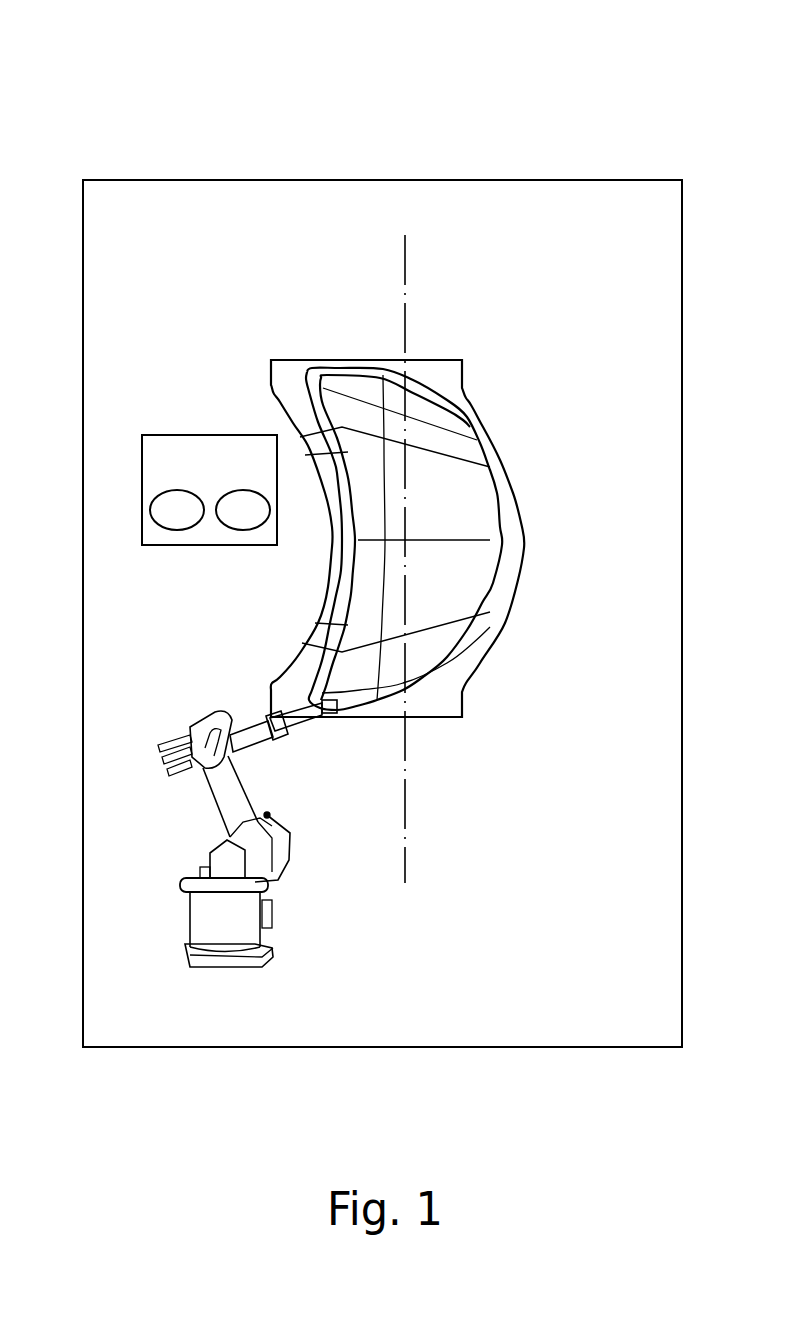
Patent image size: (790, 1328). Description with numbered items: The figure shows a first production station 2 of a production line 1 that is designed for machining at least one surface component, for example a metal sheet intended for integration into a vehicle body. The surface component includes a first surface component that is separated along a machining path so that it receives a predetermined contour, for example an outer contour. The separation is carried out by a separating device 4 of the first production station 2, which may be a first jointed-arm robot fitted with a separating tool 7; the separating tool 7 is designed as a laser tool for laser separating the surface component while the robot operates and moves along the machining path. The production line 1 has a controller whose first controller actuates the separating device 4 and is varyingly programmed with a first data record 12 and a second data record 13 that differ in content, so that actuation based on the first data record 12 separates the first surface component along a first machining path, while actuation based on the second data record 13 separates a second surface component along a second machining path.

The production line 1 is at (153, 134).
The first production station 2 is at (117, 207).
The separating device 4 is at (240, 835).
The separating tool 7 is at (303, 713).
The first data record 12 is at (177, 510).
The second data record 13 is at (243, 510).